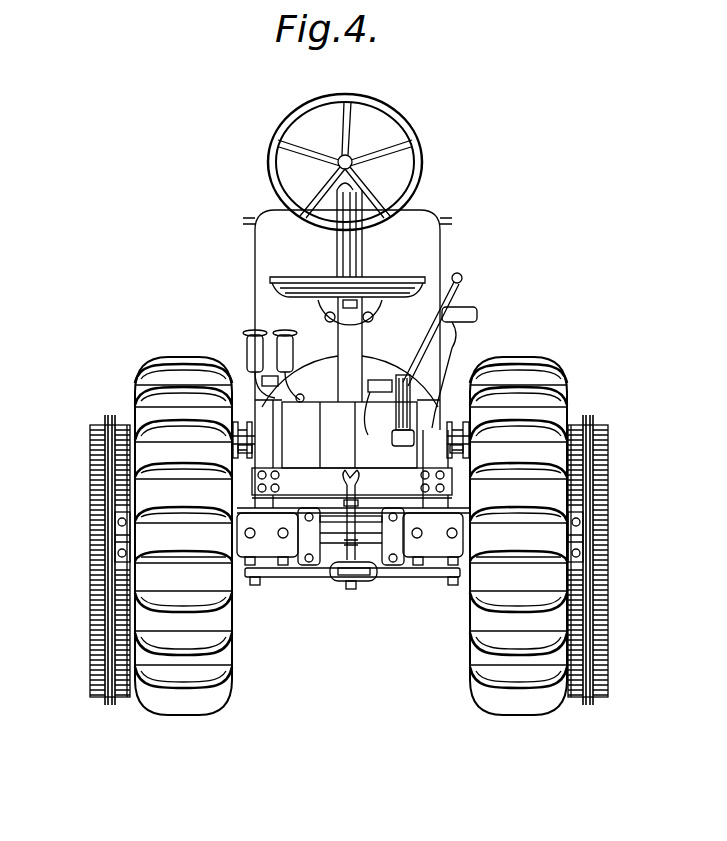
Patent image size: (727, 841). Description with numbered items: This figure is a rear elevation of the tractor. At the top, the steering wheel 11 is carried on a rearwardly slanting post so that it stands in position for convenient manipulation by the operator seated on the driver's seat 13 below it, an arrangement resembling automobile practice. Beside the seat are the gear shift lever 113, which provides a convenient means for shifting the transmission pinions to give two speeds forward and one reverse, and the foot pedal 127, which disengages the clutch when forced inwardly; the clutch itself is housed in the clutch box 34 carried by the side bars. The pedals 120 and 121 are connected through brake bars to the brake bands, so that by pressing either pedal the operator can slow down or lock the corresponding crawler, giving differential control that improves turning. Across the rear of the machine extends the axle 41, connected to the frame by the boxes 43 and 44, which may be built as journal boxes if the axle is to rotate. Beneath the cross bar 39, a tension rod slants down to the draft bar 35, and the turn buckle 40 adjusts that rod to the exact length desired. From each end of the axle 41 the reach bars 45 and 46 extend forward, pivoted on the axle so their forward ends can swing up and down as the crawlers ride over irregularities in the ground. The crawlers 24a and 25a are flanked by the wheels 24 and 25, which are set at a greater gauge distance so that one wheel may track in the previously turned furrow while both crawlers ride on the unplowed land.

The steering wheel 11 is at (404, 123).
The driver's seat 13 is at (394, 276).
The gear shift lever 113 is at (463, 280).
The foot pedal 127 is at (478, 314).
The clutch box 34 is at (374, 379).
The pedal 121 is at (246, 338).
The pedal 120 is at (303, 320).
The crawler 25a is at (150, 360).
The crawler 24a is at (556, 362).
The wheel 25 is at (93, 449).
The wheel 24 is at (606, 477).
The reach bar 46 is at (118, 526).
The reach bar 45 is at (240, 446).
The turn buckle 40 is at (347, 500).
The cross bar 39 is at (372, 480).
The box 43 is at (272, 550).
The box 44 is at (436, 548).
The draft bar 35 is at (321, 586).
The axle 41 is at (378, 560).